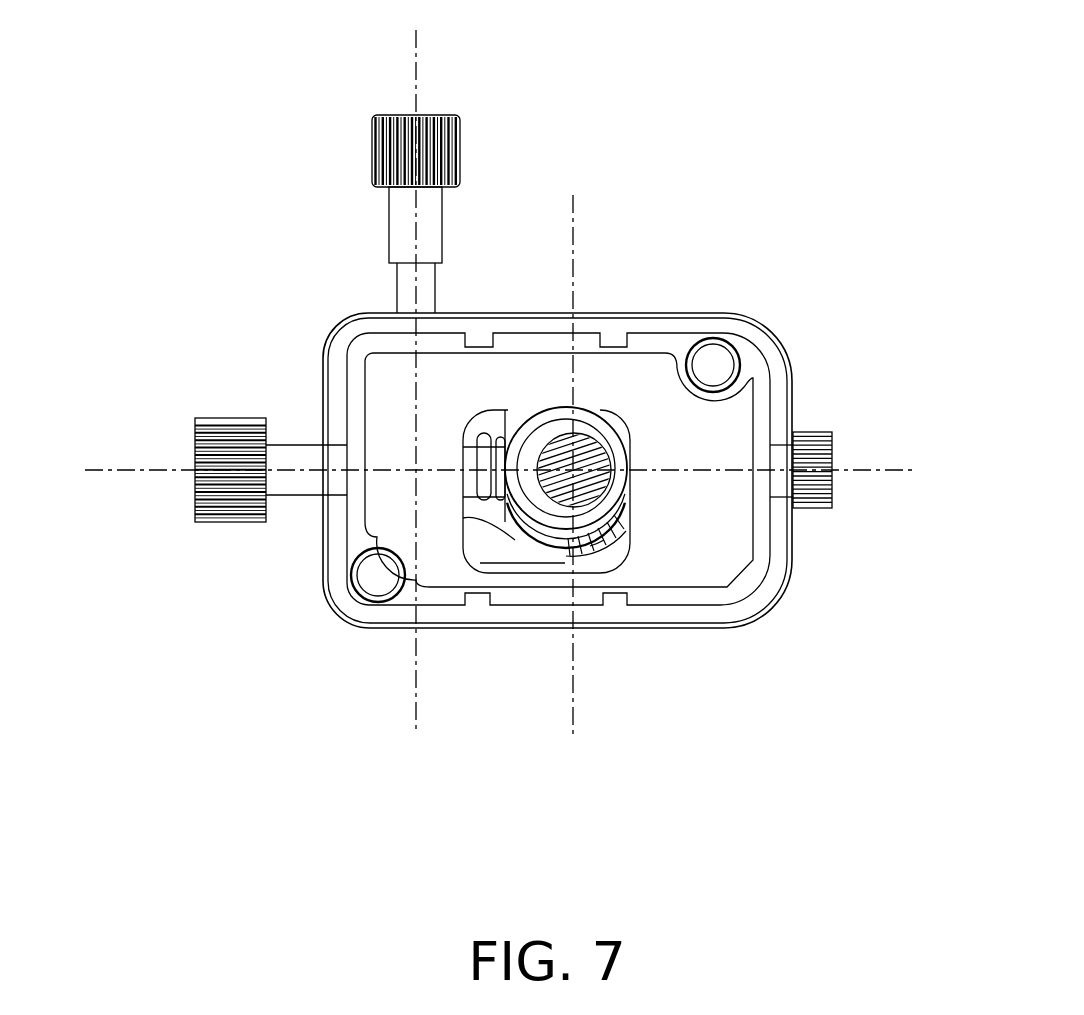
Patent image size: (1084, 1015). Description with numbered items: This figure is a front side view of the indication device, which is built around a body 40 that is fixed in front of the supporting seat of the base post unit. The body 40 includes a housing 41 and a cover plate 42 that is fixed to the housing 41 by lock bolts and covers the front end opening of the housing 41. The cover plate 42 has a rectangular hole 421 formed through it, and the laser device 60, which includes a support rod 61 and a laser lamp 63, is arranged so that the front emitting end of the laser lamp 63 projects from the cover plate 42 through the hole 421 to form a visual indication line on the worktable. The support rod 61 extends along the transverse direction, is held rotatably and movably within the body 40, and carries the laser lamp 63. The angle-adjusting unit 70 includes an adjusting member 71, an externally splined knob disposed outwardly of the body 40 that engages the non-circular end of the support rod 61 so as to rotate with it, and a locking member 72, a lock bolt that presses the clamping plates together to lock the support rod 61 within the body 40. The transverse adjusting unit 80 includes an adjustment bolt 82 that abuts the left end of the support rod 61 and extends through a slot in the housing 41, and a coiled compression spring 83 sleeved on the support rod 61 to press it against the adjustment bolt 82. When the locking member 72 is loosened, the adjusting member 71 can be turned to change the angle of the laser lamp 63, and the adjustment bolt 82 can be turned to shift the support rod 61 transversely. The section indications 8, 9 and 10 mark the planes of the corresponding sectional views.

The section line 8- 8 is at (98, 505).
The section line 9- 9 is at (606, 200).
The section line 10- 10 is at (450, 45).
The body 40 is at (763, 327).
The housing 41 is at (708, 312).
The cover plate 42 is at (737, 427).
The rectangular hole 421 is at (502, 553).
The laser device 60 is at (628, 547).
The support rod 61 is at (291, 485).
The laser lamp 63 is at (553, 513).
The angle-adjusting unit 70 is at (357, 148).
The adjusting member 71 is at (231, 440).
The locking member 72 is at (400, 227).
The transverse adjusting unit 80 is at (815, 530).
The adjustment bolt 82 is at (833, 440).
The coiled compression spring 83 is at (485, 440).